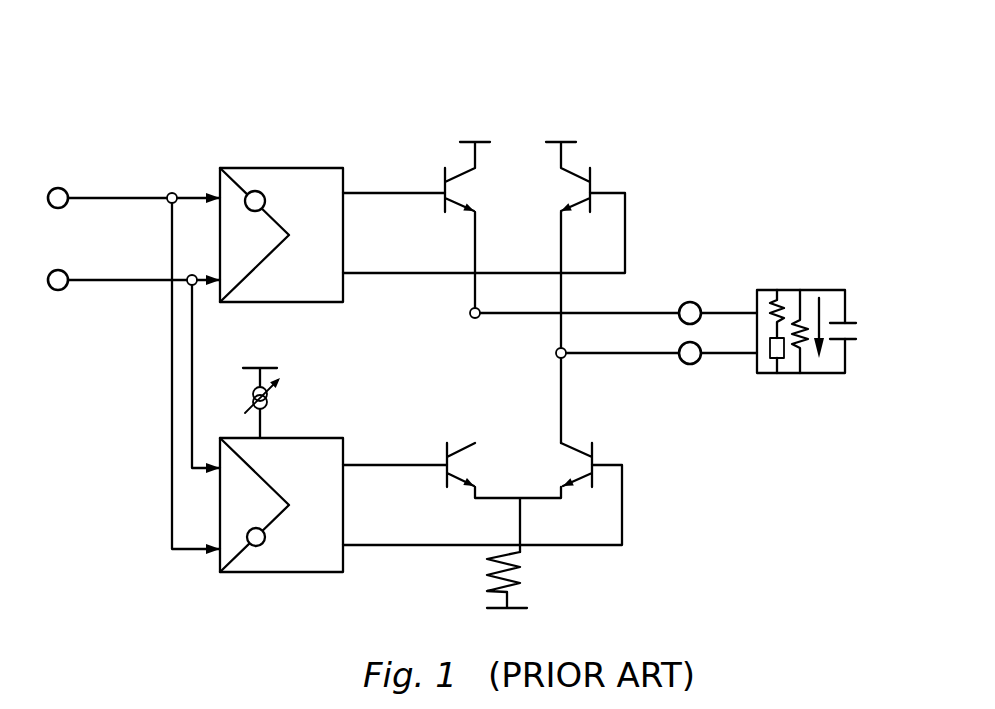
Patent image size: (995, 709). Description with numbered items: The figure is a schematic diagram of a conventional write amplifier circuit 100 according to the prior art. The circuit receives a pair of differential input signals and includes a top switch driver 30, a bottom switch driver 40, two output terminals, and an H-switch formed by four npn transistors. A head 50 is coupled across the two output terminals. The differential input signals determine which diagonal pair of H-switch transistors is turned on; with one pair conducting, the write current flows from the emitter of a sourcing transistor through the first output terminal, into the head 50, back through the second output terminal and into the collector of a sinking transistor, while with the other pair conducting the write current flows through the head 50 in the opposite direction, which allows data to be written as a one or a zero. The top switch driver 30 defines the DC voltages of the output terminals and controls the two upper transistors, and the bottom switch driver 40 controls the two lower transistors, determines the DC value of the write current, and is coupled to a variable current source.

The conventional write amplifier circuit 100 is at (737, 92).
The top switch driver 30 is at (343, 173).
The bottom switch driver 40 is at (240, 573).
The head 50 is at (845, 432).